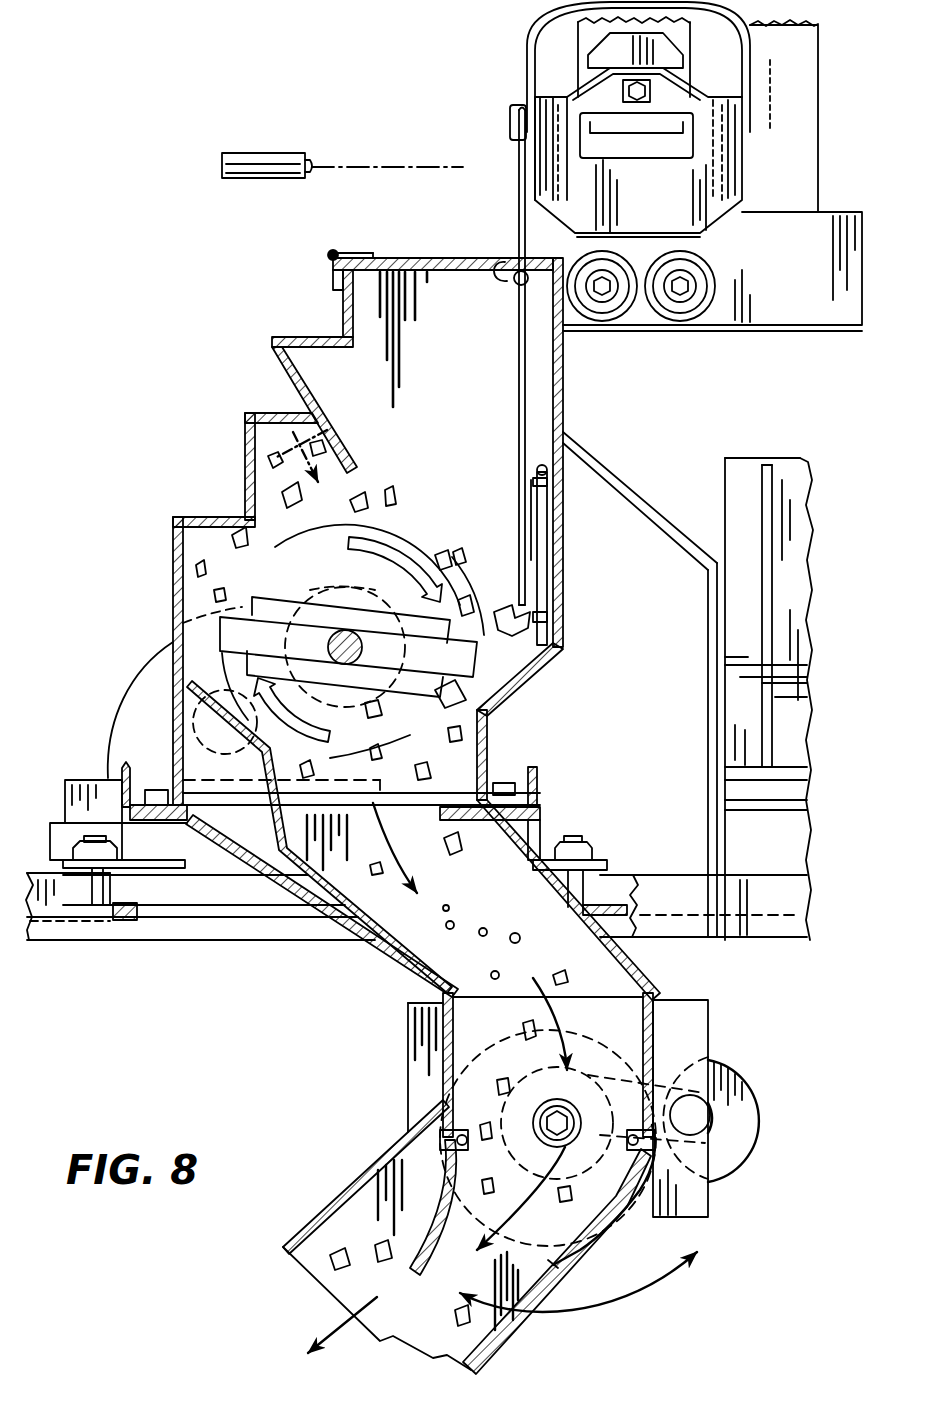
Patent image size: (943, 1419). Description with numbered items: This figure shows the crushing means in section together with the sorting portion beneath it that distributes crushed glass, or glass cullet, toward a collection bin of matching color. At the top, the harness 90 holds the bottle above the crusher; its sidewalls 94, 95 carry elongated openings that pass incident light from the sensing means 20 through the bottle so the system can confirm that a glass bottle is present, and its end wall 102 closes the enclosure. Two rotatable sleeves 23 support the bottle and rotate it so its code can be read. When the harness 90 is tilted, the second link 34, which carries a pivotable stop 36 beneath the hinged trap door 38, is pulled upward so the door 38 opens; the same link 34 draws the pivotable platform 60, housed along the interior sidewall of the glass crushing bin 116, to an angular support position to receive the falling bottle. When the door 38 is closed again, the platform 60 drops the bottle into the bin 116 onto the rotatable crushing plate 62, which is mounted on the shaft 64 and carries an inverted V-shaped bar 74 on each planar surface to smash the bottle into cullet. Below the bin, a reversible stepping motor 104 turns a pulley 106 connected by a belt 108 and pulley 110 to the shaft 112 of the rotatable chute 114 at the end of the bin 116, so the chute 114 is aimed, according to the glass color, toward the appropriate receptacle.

The sensing means 20 is at (269, 151).
The rotatable sleeves 23 is at (616, 321).
The second link 34 is at (524, 364).
The pivotable stop 36 is at (503, 272).
The hinged trap door 38 is at (396, 258).
The pivotable platform 60 is at (535, 574).
The rotatable crushing plate 62 is at (222, 624).
The shaft 64 is at (368, 649).
The inverted V-shaped bar 74 is at (266, 595).
The harness 90 is at (760, 131).
The sidewall 94 is at (745, 180).
The sidewall 95 is at (527, 97).
The end wall 102 is at (672, 208).
The reversible stepping motor 104 is at (742, 1100).
The pulley 106 is at (712, 1117).
The belt 108 is at (702, 1025).
The pulley 110 is at (518, 1158).
The shaft 112 is at (538, 1190).
The rotatable chute 114 is at (515, 1328).
The glass crushing bin 116 is at (523, 840).